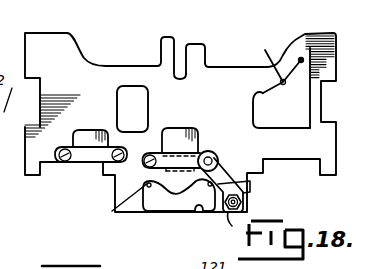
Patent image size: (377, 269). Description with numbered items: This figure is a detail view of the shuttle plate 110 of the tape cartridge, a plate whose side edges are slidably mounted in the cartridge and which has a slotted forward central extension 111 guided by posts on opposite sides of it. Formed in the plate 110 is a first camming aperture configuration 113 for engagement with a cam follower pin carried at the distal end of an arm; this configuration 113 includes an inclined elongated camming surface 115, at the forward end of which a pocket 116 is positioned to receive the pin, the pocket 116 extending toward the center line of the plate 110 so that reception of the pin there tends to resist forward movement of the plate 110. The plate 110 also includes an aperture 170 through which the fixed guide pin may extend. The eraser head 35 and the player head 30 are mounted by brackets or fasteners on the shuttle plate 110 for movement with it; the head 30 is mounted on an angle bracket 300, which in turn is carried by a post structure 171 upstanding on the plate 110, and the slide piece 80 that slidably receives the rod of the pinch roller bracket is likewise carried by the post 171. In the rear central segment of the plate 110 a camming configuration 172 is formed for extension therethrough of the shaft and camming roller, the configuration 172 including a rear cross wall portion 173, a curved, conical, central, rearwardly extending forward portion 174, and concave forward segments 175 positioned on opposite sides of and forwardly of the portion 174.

The shuttle plate 110 is at (80, 62).
The slotted forward central extension 111 is at (197, 42).
The first camming aperture configuration 113 is at (310, 113).
The inclined elongated camming surface 115 is at (265, 51).
The pocket 116 is at (303, 58).
The aperture 170 is at (147, 118).
The eraser head 35 is at (92, 150).
The tape playing-recording head 30 is at (190, 128).
The lever 300 is at (222, 165).
The post structure 171 is at (243, 202).
The slide piece 80 is at (229, 216).
The concave forward segments 175 is at (112, 211).
The camming configuration 172 is at (162, 196).
The rear cross wall portion 173 is at (195, 176).
The curved, conical, central, rearwardly extending forward portion 174 is at (153, 252).